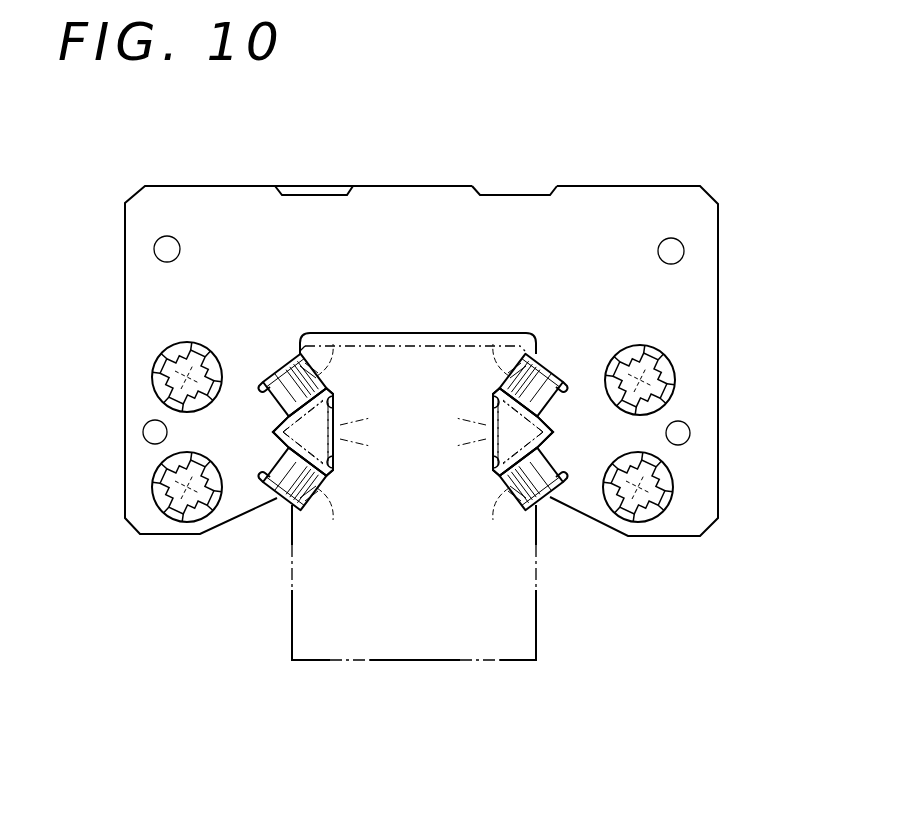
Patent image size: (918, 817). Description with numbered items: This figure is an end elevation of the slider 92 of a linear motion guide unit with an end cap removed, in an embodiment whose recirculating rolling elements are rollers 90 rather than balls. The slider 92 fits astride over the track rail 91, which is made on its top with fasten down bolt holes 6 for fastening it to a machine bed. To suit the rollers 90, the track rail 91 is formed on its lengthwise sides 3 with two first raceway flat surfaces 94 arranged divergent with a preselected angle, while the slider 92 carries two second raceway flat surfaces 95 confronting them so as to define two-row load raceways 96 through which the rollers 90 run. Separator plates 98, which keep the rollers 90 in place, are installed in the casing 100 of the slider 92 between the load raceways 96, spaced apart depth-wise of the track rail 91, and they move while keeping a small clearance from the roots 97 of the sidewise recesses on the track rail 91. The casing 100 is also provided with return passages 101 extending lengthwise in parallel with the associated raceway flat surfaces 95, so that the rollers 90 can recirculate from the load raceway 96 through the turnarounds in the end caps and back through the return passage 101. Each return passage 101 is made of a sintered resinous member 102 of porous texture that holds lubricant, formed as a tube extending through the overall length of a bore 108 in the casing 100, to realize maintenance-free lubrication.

The sides 3 is at (292, 622).
The fasten down bolt holes 6 is at (192, 512).
The rollers 90 is at (298, 360).
The track rail 91 is at (427, 663).
The slider 92 is at (500, 190).
The first raceway flat surfaces 94 is at (318, 396).
The second raceway flat surfaces 95 is at (268, 378).
The raceways 96 is at (282, 368).
The roots of sidewise recesses 97 is at (335, 462).
The separator plates 98 is at (305, 430).
The casing 100 is at (690, 272).
The return passages 101 is at (185, 365).
The sintered resinous member 102 is at (160, 383).
The bore 108 is at (152, 372).